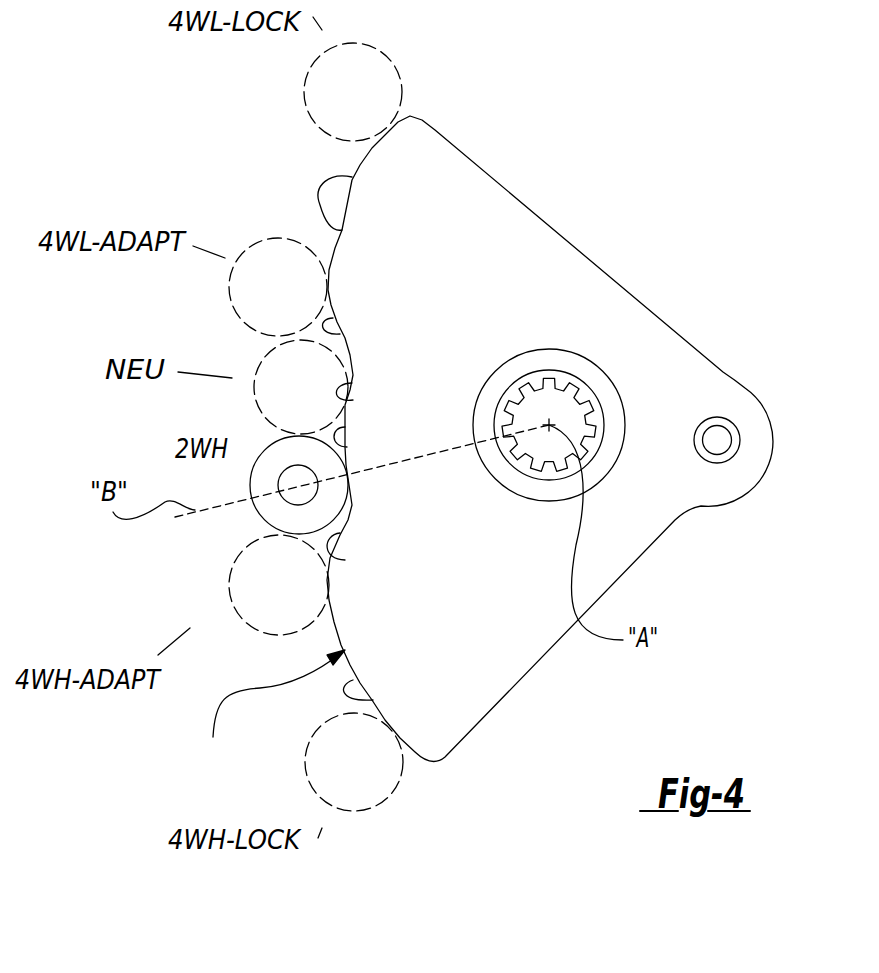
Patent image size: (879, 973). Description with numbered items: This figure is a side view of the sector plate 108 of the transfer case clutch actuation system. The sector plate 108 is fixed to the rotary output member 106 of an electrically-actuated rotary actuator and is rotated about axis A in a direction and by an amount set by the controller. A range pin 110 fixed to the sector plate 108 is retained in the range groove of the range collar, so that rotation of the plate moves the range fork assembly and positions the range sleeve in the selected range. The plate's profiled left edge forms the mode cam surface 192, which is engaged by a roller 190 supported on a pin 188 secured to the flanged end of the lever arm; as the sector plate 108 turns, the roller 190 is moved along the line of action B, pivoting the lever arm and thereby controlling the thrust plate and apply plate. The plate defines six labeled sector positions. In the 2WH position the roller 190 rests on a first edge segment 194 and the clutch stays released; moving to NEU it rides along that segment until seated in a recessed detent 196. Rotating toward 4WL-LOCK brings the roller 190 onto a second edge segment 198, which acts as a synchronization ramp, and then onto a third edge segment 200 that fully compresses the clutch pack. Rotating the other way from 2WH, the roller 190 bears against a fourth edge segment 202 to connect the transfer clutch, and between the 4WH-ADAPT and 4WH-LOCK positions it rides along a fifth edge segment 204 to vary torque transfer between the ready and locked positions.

The rotary output member 106 is at (570, 403).
The sector plate 108 is at (562, 280).
The range pin 110 is at (722, 437).
The pin 188 is at (312, 495).
The roller 190 is at (260, 512).
The mode cam surface 192 is at (267, 712).
The first edge segment 194 is at (347, 447).
The recessed detent 196 is at (353, 400).
The second edge segment 198 is at (340, 334).
The third edge segment 200 is at (342, 230).
The fourth edge segment 202 is at (345, 560).
The fifth edge segment 204 is at (373, 700).